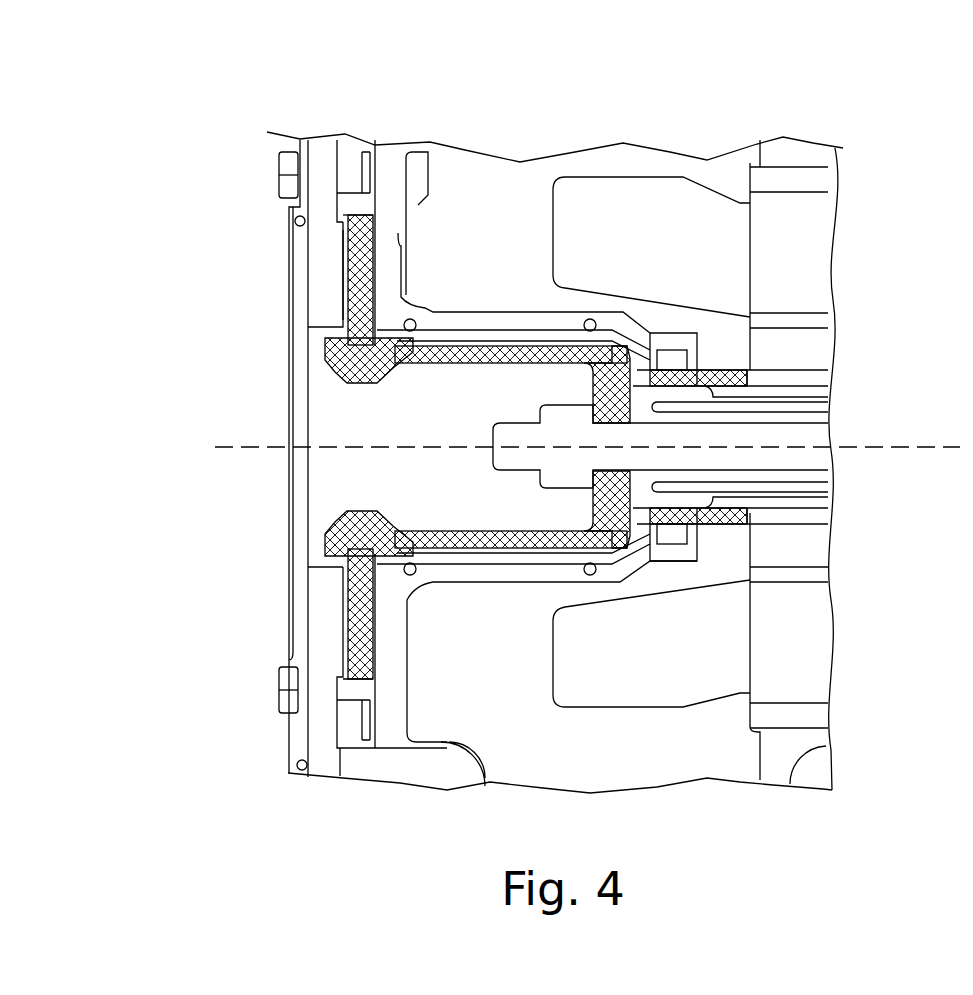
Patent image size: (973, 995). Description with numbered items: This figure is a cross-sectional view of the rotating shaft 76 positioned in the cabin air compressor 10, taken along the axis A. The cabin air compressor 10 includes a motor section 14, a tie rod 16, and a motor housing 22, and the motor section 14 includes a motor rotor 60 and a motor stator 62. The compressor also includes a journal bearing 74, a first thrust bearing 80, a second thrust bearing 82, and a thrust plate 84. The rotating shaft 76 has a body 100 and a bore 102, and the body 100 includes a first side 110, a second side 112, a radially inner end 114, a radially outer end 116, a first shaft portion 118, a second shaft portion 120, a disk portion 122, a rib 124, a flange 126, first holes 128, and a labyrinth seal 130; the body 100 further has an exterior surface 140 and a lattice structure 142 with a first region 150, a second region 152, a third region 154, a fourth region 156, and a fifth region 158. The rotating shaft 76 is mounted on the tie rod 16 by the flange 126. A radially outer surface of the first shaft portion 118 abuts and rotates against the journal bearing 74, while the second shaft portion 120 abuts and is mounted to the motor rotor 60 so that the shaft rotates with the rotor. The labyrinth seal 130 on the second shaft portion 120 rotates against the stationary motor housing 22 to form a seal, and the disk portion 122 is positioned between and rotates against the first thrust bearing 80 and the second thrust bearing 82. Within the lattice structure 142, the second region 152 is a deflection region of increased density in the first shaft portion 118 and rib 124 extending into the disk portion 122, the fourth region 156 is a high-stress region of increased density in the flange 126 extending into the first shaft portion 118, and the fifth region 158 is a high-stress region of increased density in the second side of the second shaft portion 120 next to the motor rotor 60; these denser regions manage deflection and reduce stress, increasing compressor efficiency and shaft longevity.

The cabin air compressor 10 is at (210, 83).
The motor section 14 is at (727, 72).
The tie rod 16 is at (773, 435).
The motor housing 22 is at (437, 743).
The motor rotor 60 is at (787, 383).
The motor stator 62 is at (793, 235).
The journal bearing 74 is at (468, 330).
The rotating shaft 76 is at (272, 260).
The first thrust bearing 80 is at (398, 233).
The second thrust bearing 82 is at (343, 280).
The thrust plate 84 is at (320, 278).
The body 100 is at (528, 350).
The bore 102 is at (437, 405).
The first side 110 is at (325, 532).
The second side 112 is at (752, 517).
The radially inner end 114 is at (612, 430).
The radially outer end 116 is at (353, 200).
The first shaft portion 118 is at (420, 365).
The second shaft portion 120 is at (713, 357).
The disk portion 122 is at (360, 228).
The rib 124 is at (335, 366).
The flange 126 is at (597, 407).
The first holes 128 is at (650, 337).
The labyrinth seal 130 is at (673, 368).
The exterior surface 140 is at (428, 530).
The lattice structure 142 is at (467, 537).
The first region 150 is at (357, 614).
The second region 152 is at (343, 535).
The third region 154 is at (513, 540).
The fourth region 156 is at (622, 557).
The fifth region 158 is at (727, 527).
The axis A is at (925, 444).